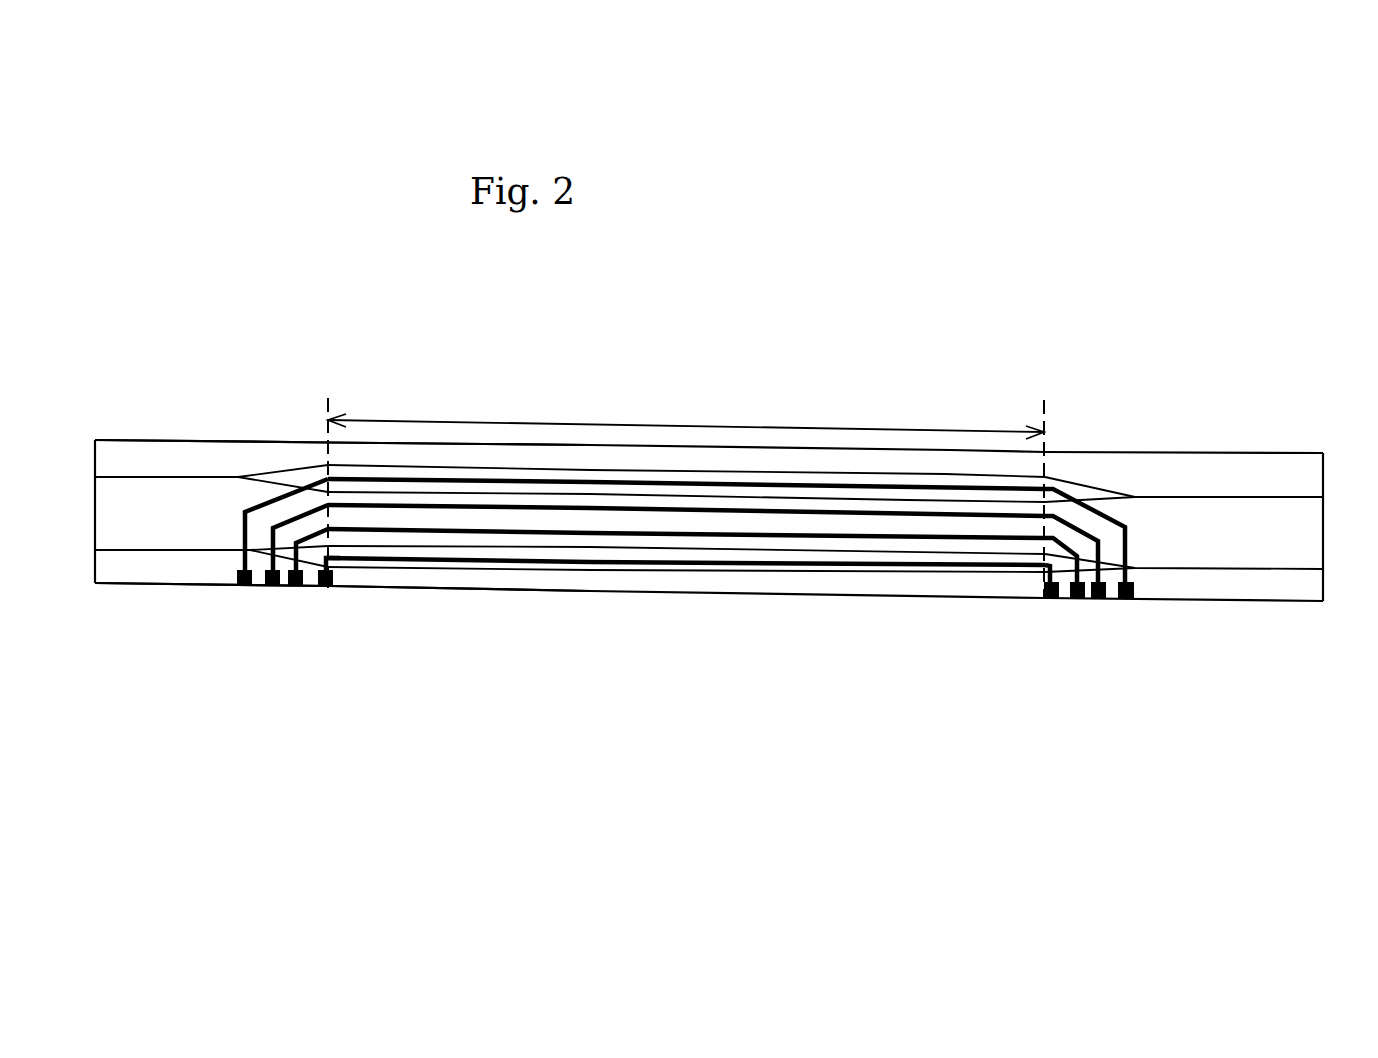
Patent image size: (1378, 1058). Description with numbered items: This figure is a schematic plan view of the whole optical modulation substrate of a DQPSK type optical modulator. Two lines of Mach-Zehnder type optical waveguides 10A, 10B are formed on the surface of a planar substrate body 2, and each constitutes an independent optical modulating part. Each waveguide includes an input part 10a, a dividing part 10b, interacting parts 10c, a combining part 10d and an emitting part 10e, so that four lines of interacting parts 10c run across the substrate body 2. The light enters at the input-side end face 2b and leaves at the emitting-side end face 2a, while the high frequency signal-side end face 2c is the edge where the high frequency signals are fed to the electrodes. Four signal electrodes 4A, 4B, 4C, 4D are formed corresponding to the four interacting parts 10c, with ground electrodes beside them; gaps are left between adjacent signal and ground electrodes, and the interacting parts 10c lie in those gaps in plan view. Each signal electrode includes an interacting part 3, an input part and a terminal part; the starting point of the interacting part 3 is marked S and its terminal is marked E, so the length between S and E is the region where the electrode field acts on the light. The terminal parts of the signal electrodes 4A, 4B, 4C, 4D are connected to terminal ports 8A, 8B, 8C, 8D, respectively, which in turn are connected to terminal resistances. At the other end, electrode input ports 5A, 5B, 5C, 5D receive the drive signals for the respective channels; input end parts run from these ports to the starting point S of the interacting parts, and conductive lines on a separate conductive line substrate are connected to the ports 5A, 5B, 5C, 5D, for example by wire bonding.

The substrate body 2 is at (1090, 452).
The emitting-side end face 2a is at (95, 467).
The input-side end face 2b is at (1322, 476).
The high frequency signal-side end face 2c is at (1300, 604).
The interacting part 3 is at (732, 427).
The signal electrode 4A is at (558, 563).
The signal electrode 4B is at (642, 535).
The signal electrode 4C is at (515, 503).
The signal electrode 4D is at (582, 482).
The electrode input port 5A is at (1048, 602).
The electrode input port 5B is at (1077, 602).
The electrode input port 5C is at (1100, 602).
The electrode input port 5D is at (1132, 602).
The terminal port 8A is at (330, 586).
The terminal port 8B is at (295, 586).
The terminal port 8C is at (272, 586).
The terminal port 8D is at (243, 586).
The Mach-Zehnder type optical waveguide 10A is at (168, 548).
The Mach-Zehnder type optical waveguide 10B is at (168, 475).
The input part 10a is at (1220, 495).
The dividing part 10b is at (1137, 497).
The interacting part 10c is at (908, 500).
The combining part 10d is at (243, 478).
The emitting part 10e is at (198, 480).
The terminal of the interacting part E is at (327, 405).
The starting point of the interacting part S is at (1043, 427).